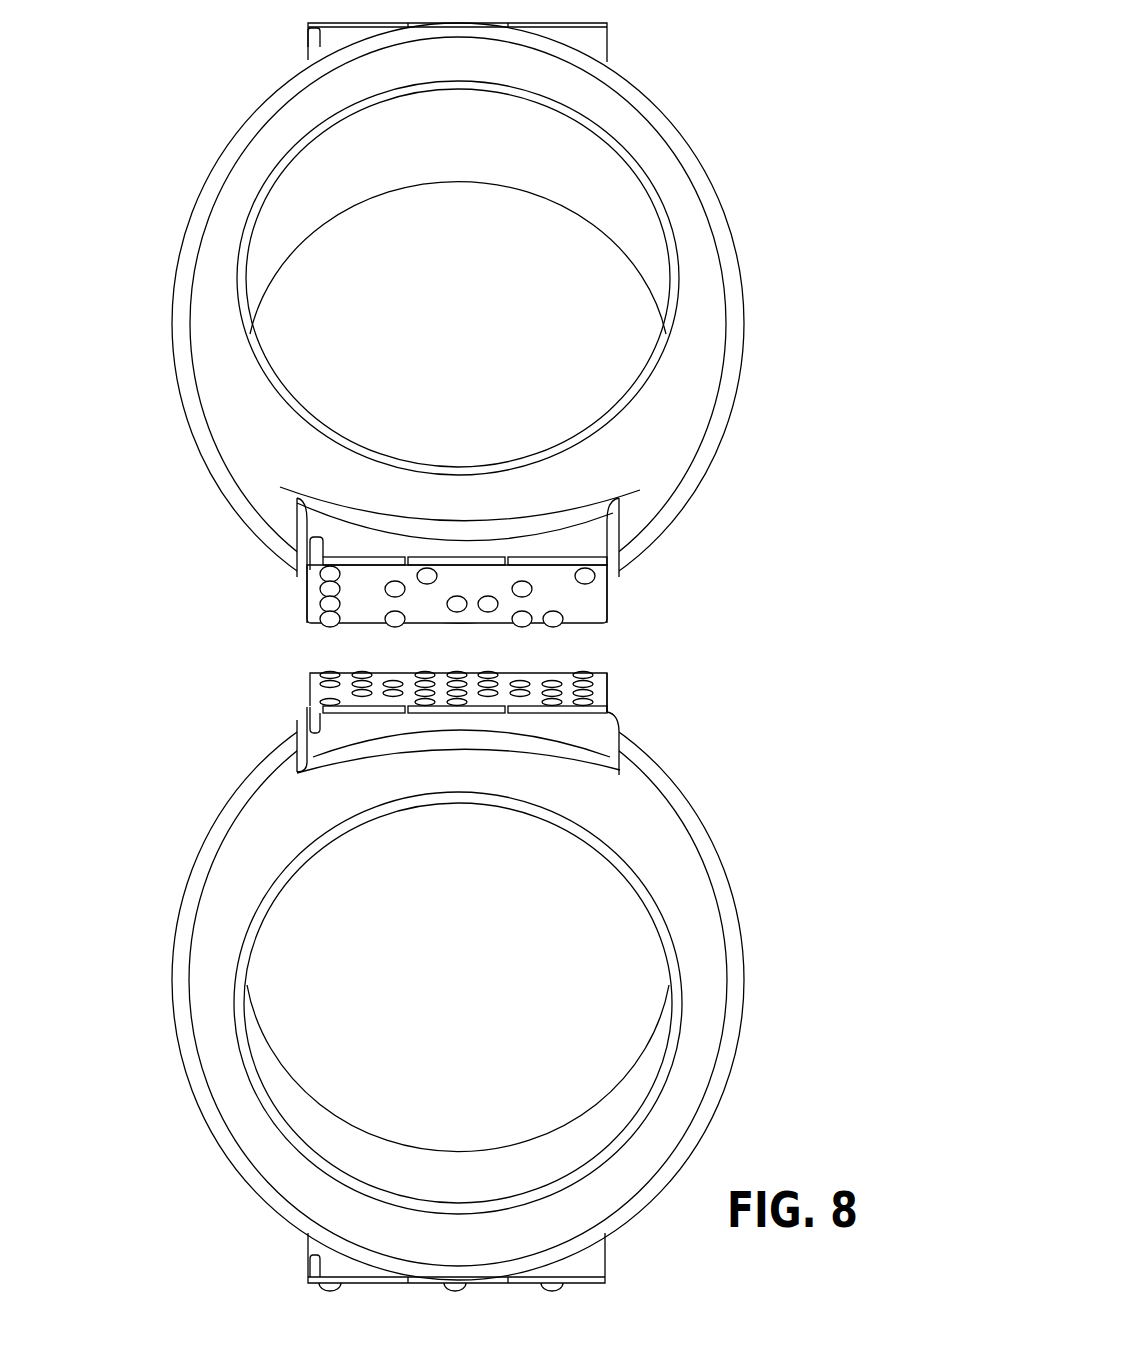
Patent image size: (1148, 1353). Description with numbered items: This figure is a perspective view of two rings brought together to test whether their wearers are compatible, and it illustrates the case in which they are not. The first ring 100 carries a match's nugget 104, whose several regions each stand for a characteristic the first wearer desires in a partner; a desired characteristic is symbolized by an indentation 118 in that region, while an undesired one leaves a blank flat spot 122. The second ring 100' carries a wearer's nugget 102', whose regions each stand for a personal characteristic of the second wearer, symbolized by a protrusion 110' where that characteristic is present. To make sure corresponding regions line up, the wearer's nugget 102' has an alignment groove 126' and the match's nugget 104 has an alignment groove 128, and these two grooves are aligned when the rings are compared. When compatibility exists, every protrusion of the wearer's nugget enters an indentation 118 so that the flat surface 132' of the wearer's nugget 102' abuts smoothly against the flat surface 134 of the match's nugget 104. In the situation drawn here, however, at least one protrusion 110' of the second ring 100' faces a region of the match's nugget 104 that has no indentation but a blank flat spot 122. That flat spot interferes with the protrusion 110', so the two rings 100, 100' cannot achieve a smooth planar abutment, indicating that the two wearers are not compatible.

The second ring 100' is at (553, 323).
The first ring 100 is at (552, 985).
The wearer's nugget 102' is at (555, 541).
The match's nugget 104 is at (587, 728).
The protrusion 110' is at (457, 592).
The indentation 118 is at (610, 716).
The blank flat spot 122 is at (390, 674).
The alignment groove 126' is at (207, 524).
The alignment groove 128 is at (303, 722).
The flat surface 132' is at (569, 566).
The flat surface 134 is at (605, 694).